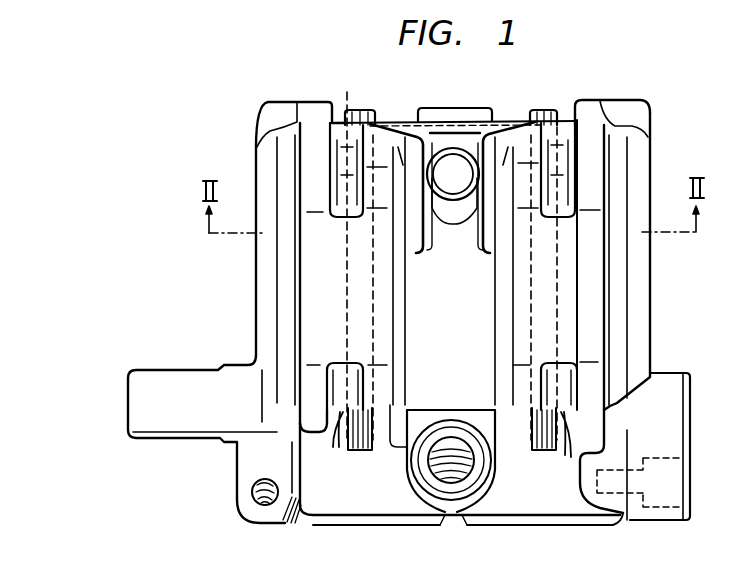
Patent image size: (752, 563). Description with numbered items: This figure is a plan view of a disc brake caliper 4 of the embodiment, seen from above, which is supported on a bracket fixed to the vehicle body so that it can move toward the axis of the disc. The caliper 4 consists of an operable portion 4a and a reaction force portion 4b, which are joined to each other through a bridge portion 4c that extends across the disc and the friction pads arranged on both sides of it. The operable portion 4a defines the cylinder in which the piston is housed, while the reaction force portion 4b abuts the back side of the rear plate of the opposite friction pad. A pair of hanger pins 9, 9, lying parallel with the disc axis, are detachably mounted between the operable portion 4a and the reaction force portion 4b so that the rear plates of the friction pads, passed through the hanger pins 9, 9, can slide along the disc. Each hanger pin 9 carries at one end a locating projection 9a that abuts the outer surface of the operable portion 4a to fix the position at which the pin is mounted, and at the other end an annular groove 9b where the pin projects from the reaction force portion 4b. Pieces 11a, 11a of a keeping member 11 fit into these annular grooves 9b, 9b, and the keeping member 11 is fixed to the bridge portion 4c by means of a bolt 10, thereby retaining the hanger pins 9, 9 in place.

The caliper 4 is at (652, 279).
The operable portion 4a is at (502, 507).
The reaction force portion 4b is at (601, 115).
The bridge portion 4c is at (593, 302).
The hanger pin 9 is at (356, 448).
The locating projection 9a is at (342, 414).
The annular groove 9b is at (539, 100).
The bolt 10 is at (452, 188).
The keeping member 11 is at (458, 114).
The piece of keeping member 11a is at (382, 118).